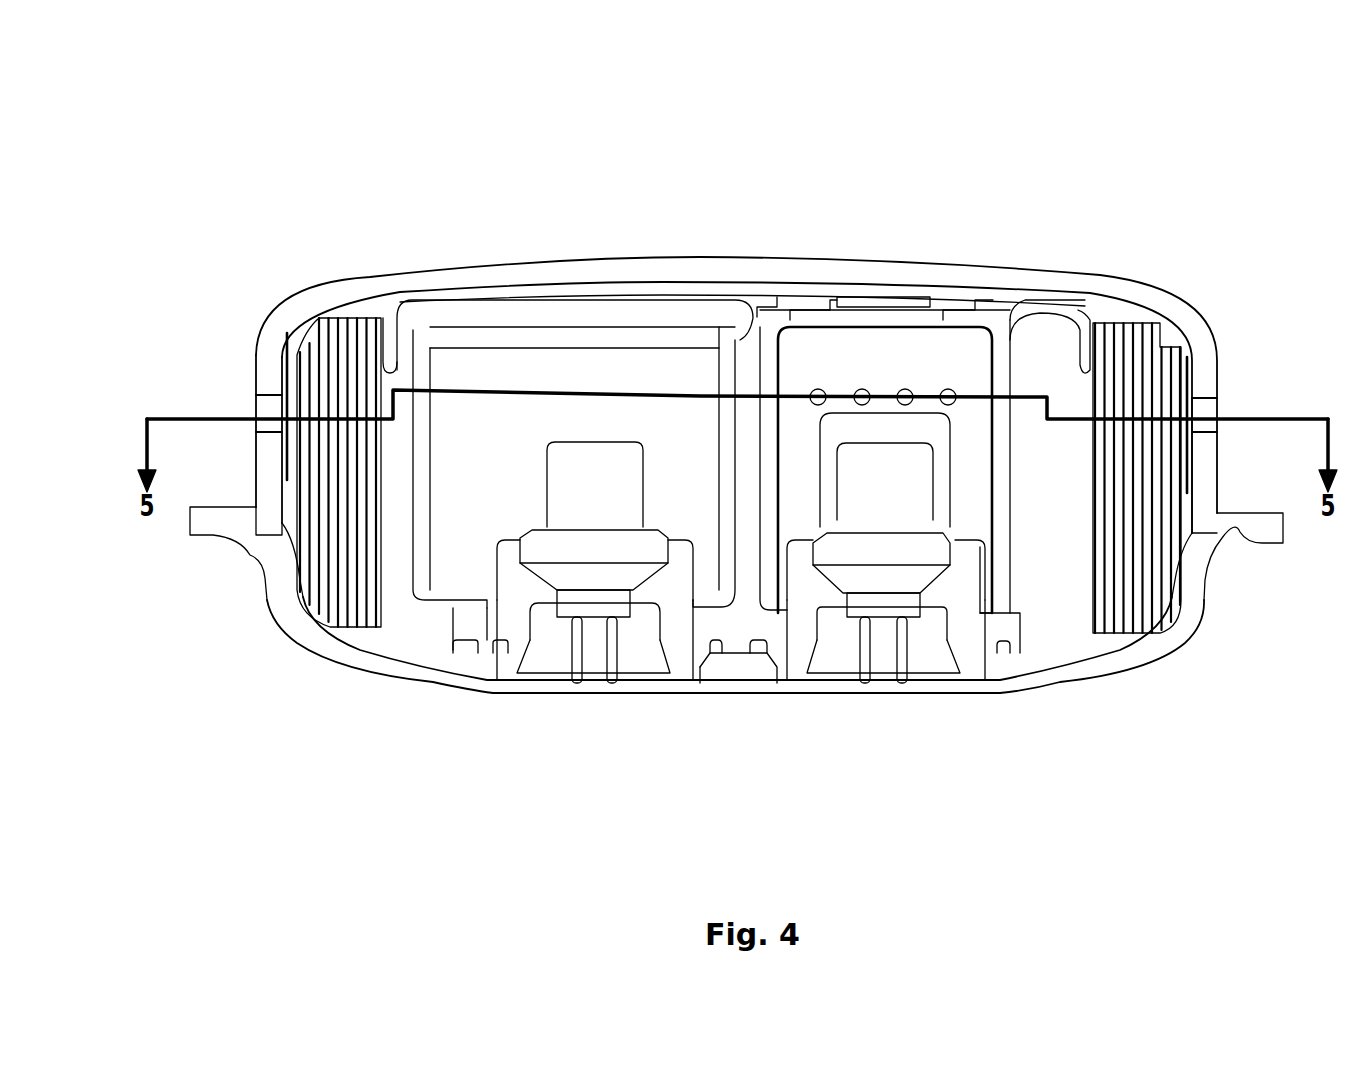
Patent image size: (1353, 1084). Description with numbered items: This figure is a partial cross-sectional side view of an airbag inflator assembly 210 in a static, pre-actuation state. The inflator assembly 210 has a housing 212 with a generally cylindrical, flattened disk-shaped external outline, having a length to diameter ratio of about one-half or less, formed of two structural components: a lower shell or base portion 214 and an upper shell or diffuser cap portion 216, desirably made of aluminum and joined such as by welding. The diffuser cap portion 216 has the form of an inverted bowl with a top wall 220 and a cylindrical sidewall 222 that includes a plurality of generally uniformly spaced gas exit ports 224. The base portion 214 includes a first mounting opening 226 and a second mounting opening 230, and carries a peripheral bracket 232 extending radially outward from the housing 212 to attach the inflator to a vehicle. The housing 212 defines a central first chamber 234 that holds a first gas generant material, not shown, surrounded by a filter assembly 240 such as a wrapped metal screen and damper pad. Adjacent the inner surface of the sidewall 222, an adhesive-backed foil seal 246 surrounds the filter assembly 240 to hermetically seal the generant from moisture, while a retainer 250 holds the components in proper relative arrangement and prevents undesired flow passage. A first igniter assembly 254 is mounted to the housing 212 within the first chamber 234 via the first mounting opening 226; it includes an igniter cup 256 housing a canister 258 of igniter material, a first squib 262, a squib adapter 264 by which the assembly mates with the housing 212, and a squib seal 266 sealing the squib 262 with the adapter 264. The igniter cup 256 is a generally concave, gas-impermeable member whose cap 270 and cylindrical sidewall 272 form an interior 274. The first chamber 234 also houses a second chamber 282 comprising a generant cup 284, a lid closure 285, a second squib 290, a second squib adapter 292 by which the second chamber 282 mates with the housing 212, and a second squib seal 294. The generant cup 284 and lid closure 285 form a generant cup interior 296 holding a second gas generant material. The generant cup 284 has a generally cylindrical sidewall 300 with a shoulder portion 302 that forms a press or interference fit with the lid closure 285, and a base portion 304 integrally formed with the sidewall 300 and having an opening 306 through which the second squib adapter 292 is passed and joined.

The inflator assembly 210 is at (1053, 185).
The housing 212 is at (1203, 290).
The base portion 214 is at (1143, 642).
The diffuser cap portion 216 is at (712, 268).
The top wall 220 is at (826, 262).
The cylindrical sidewall 222 is at (1200, 478).
The gas exit ports 224 is at (1218, 398).
The first mounting opening 226 is at (1007, 672).
The second mounting opening 230 is at (703, 665).
The peripheral bracket 232 is at (1240, 527).
The first chamber 234 is at (1050, 377).
The filter assembly 240 is at (318, 578).
The adhesive-backed foil seal 246 is at (291, 330).
The retainer 250 is at (385, 320).
The first igniter assembly 254 is at (855, 768).
The igniter cup 256 is at (967, 318).
The canister 258 is at (877, 325).
The first squib 262 is at (878, 573).
The squib adapter 264 is at (795, 650).
The squib seal 266 is at (928, 583).
The cap 270 is at (835, 312).
The cylindrical sidewall 272 is at (1023, 573).
The interior 274 is at (1003, 268).
The second chamber 282 is at (385, 600).
The generant cup 284 is at (422, 572).
The lid closure 285 is at (515, 325).
The second squib 290 is at (590, 655).
The second squib adapter 292 is at (685, 650).
The second squib seal 294 is at (598, 572).
The generant cup interior 296 is at (570, 380).
The cylindrical sidewall 300 is at (715, 360).
The shoulder portion 302 is at (712, 440).
The base portion 304 is at (460, 605).
The opening 306 is at (495, 640).